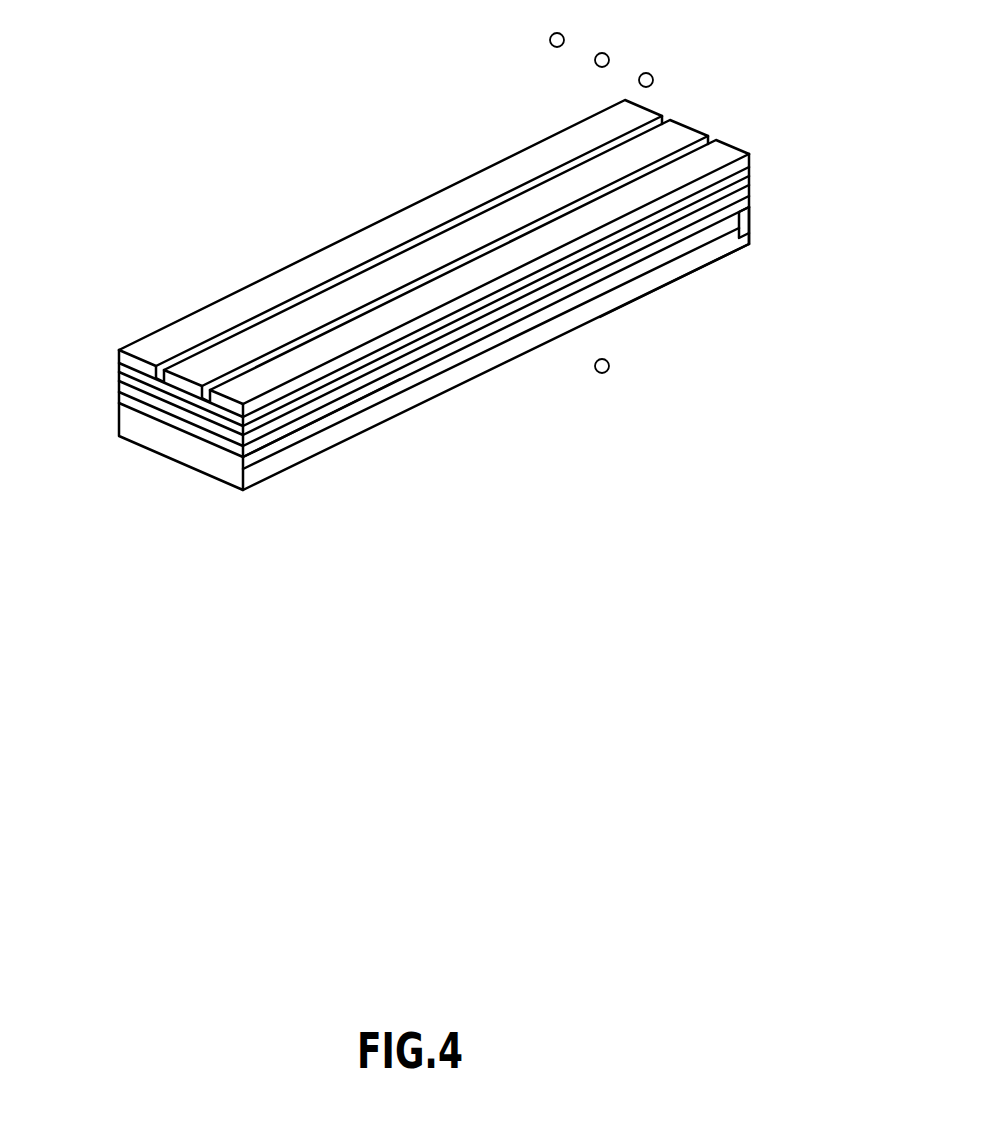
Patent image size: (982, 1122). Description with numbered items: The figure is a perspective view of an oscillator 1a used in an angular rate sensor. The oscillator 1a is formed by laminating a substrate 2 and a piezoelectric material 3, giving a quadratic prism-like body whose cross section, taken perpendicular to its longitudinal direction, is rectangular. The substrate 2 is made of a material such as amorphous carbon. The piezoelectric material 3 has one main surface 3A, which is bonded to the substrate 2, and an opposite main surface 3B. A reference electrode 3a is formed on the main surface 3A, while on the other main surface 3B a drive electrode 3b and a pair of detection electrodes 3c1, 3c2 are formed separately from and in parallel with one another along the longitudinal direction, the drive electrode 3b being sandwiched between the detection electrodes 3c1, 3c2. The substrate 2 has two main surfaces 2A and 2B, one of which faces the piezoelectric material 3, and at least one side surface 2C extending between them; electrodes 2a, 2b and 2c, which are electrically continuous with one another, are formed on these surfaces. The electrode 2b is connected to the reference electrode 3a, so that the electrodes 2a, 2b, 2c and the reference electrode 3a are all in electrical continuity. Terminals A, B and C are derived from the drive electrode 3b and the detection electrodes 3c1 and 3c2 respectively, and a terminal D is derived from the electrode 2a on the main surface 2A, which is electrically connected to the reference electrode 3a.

The oscillator 1a is at (618, 483).
The substrate 2 is at (233, 457).
The electrode 2a is at (445, 383).
The electrode 2b is at (326, 413).
The main surface 2A is at (680, 270).
The main surface 2B is at (738, 192).
The electrode 2c is at (750, 213).
The side surface 2C is at (740, 222).
The piezoelectric material 3 is at (195, 407).
The reference electrode 3a is at (133, 390).
The main surface 3A is at (143, 392).
The main surface 3B is at (133, 365).
The drive electrode 3b is at (447, 250).
The detection electrode 3c1 is at (324, 267).
The detection electrode 3c2 is at (552, 243).
The terminal A is at (602, 172).
The terminal B is at (557, 150).
The terminal C is at (646, 190).
The terminal D is at (602, 318).